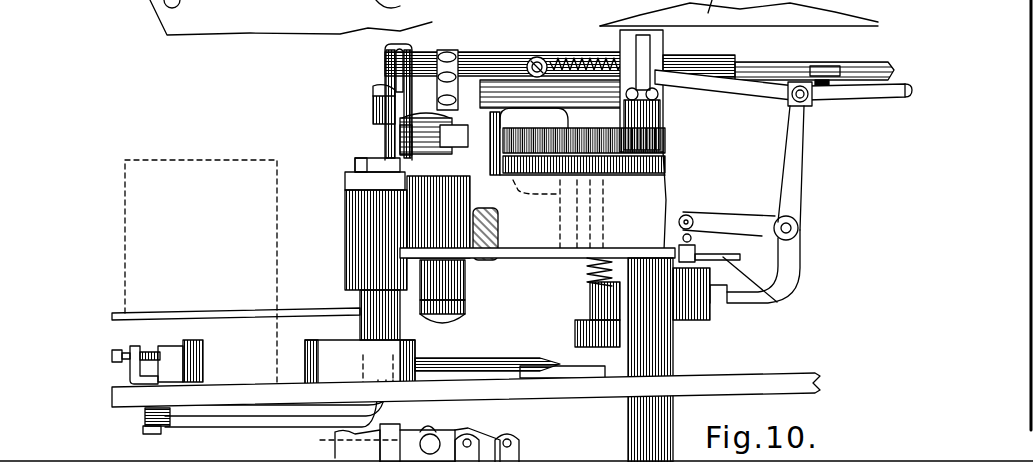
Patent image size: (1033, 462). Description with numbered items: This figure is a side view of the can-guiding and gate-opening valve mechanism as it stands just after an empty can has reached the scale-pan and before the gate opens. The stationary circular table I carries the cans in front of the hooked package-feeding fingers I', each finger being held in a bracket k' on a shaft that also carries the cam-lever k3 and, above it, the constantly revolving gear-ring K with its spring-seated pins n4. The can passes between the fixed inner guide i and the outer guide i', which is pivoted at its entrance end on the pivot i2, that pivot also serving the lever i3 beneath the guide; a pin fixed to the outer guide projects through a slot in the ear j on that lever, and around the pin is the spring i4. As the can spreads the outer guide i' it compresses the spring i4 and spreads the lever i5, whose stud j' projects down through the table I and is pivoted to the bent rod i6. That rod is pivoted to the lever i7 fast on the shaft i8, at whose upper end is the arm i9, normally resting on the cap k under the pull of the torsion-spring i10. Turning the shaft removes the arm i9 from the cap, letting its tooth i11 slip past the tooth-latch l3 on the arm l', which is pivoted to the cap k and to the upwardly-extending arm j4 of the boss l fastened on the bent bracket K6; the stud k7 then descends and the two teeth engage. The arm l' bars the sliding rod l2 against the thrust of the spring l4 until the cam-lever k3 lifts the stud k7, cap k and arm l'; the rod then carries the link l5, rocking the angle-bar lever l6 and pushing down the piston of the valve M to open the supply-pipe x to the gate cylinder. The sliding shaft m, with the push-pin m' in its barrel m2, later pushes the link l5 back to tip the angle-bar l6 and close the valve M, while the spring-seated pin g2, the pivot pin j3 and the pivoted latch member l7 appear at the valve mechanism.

The spring-seated pin g2 is at (275, 208).
The arm l' is at (431, 242).
The sliding rod l2 is at (485, 64).
The spring l4 is at (565, 58).
The gear-ring K is at (668, 148).
The bent bracket K6 is at (434, 133).
The cap k is at (360, 111).
The arm i9 is at (372, 92).
The boss l is at (379, 140).
The stud k7 is at (360, 162).
The cam-lever k3 is at (357, 173).
The bracket k' is at (355, 265).
The spring-seated pin n4 is at (466, 300).
The inner guide i is at (360, 365).
The bent rod i6 is at (458, 362).
The lever i7 is at (556, 368).
The torsion-spring i10 is at (586, 268).
The shaft i8 is at (588, 326).
The table I is at (466, 374).
The package-feeding fingers I' is at (236, 301).
The lever i3 is at (124, 352).
The ear j is at (135, 395).
The spring i4 is at (148, 352).
The outer guide i' is at (170, 351).
The pivot i2 is at (204, 344).
The lever i5 is at (172, 386).
The stud j' is at (145, 430).
The tooth i11 is at (359, 451).
The tooth-latch l3 is at (432, 460).
The pin j3 is at (472, 440).
The upwardly-extending arm j4 is at (521, 458).
The sliding shaft m is at (778, 65).
The spring-seated push-pin m' is at (838, 52).
The barrel m2 is at (800, 78).
The link l5 is at (748, 100).
The angle-bar lever l6 is at (797, 178).
The piston-valve M is at (738, 225).
The hook l7 is at (796, 262).
The supply-pipe x is at (759, 286).